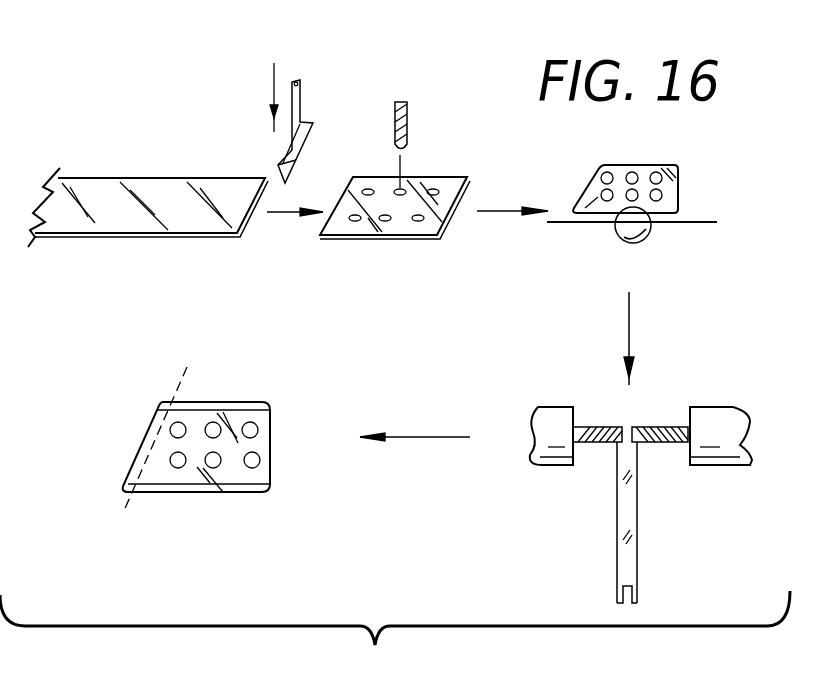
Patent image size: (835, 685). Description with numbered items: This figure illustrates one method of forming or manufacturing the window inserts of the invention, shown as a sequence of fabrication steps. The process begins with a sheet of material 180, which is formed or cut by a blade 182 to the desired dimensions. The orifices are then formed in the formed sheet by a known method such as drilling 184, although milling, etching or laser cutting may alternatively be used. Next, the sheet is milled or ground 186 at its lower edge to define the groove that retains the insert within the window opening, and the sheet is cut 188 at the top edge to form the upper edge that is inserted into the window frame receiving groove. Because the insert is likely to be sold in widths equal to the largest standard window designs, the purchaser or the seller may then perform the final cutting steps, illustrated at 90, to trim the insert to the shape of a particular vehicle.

The sheet of material 180 is at (98, 195).
The blade 182 is at (310, 148).
The drilling 184 is at (407, 131).
The milling or grinding 186 is at (650, 237).
The cutting 188 is at (660, 443).
The final cutting steps 90 is at (178, 373).